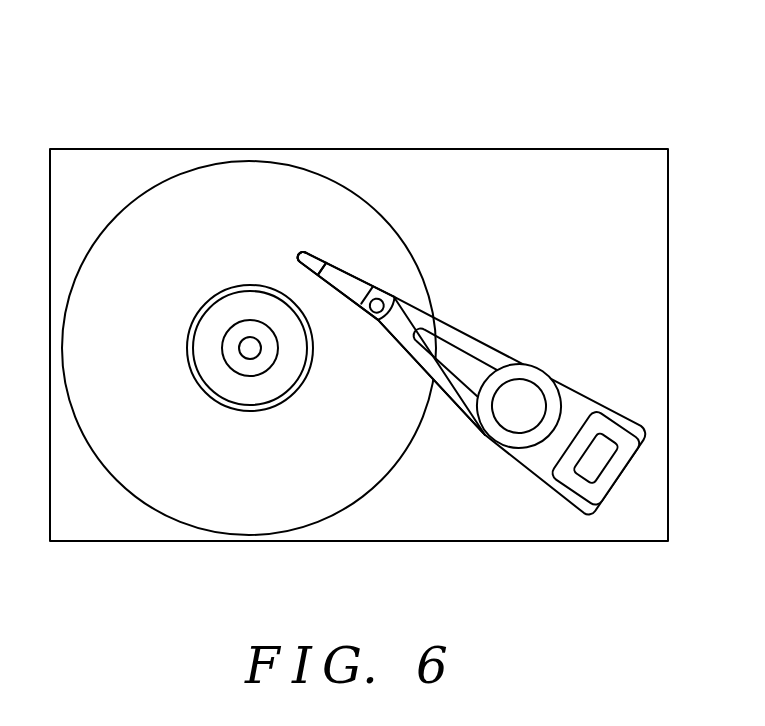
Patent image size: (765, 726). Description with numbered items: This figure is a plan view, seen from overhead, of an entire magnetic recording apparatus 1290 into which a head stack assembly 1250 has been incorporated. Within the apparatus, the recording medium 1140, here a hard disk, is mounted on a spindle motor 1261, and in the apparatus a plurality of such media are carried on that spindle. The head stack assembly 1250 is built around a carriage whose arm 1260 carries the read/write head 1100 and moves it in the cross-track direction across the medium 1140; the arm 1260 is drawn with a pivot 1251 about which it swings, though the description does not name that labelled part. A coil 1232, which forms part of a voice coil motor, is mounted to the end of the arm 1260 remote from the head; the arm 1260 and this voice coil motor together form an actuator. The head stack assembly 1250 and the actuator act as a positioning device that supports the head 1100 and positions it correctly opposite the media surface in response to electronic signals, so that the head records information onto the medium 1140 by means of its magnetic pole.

The magnetic recording apparatus 1290 is at (398, 138).
The read/write head 1100 is at (310, 252).
The pivot bearing 1251 is at (530, 364).
The medium 1140 is at (177, 522).
The spindle motor 1261 is at (250, 360).
The arm 1260 is at (472, 400).
The head stack assembly 1250 is at (528, 462).
The coil 1232 is at (619, 478).